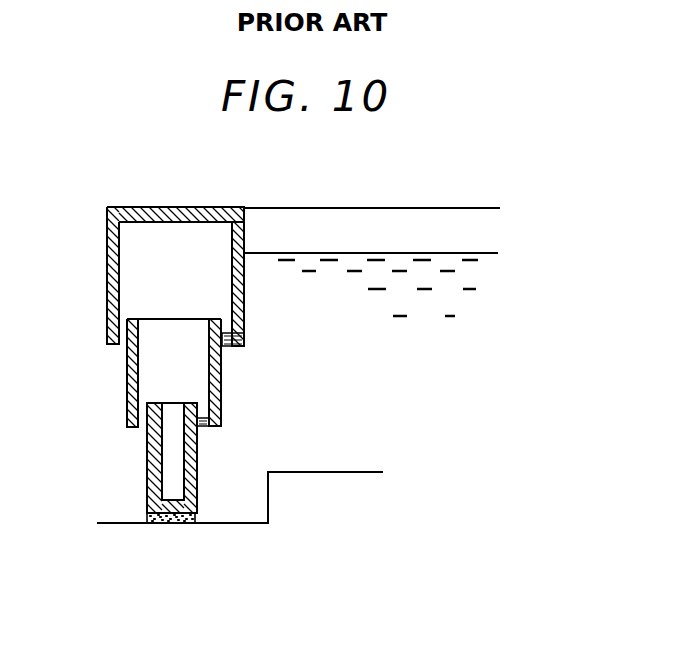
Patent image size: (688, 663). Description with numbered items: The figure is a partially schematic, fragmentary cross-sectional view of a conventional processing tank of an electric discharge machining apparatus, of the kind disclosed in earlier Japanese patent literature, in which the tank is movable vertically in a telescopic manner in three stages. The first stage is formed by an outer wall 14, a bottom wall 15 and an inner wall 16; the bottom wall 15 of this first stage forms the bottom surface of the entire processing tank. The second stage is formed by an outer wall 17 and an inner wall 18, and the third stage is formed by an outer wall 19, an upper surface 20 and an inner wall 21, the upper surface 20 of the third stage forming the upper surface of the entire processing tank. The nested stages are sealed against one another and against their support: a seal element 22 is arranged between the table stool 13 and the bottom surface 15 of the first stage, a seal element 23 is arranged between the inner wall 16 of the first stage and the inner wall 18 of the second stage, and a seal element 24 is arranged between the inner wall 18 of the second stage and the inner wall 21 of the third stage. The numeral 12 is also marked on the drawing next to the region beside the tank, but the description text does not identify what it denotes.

The liquid level 12 is at (487, 265).
The table stool 13 is at (360, 478).
The outer wall of first stage 14 is at (148, 465).
The bottom wall of first stage 15 is at (180, 524).
The inner wall of first stage 16 is at (197, 478).
The outer wall of second stage 17 is at (130, 392).
The inner wall of second stage 18 is at (222, 385).
The outer wall of third stage 19 is at (112, 294).
The upper surface of third stage 20 is at (217, 207).
The inner wall of third stage 21 is at (244, 307).
The seal element 22 is at (162, 525).
The seal element 23 is at (208, 423).
The seal element 24 is at (244, 338).